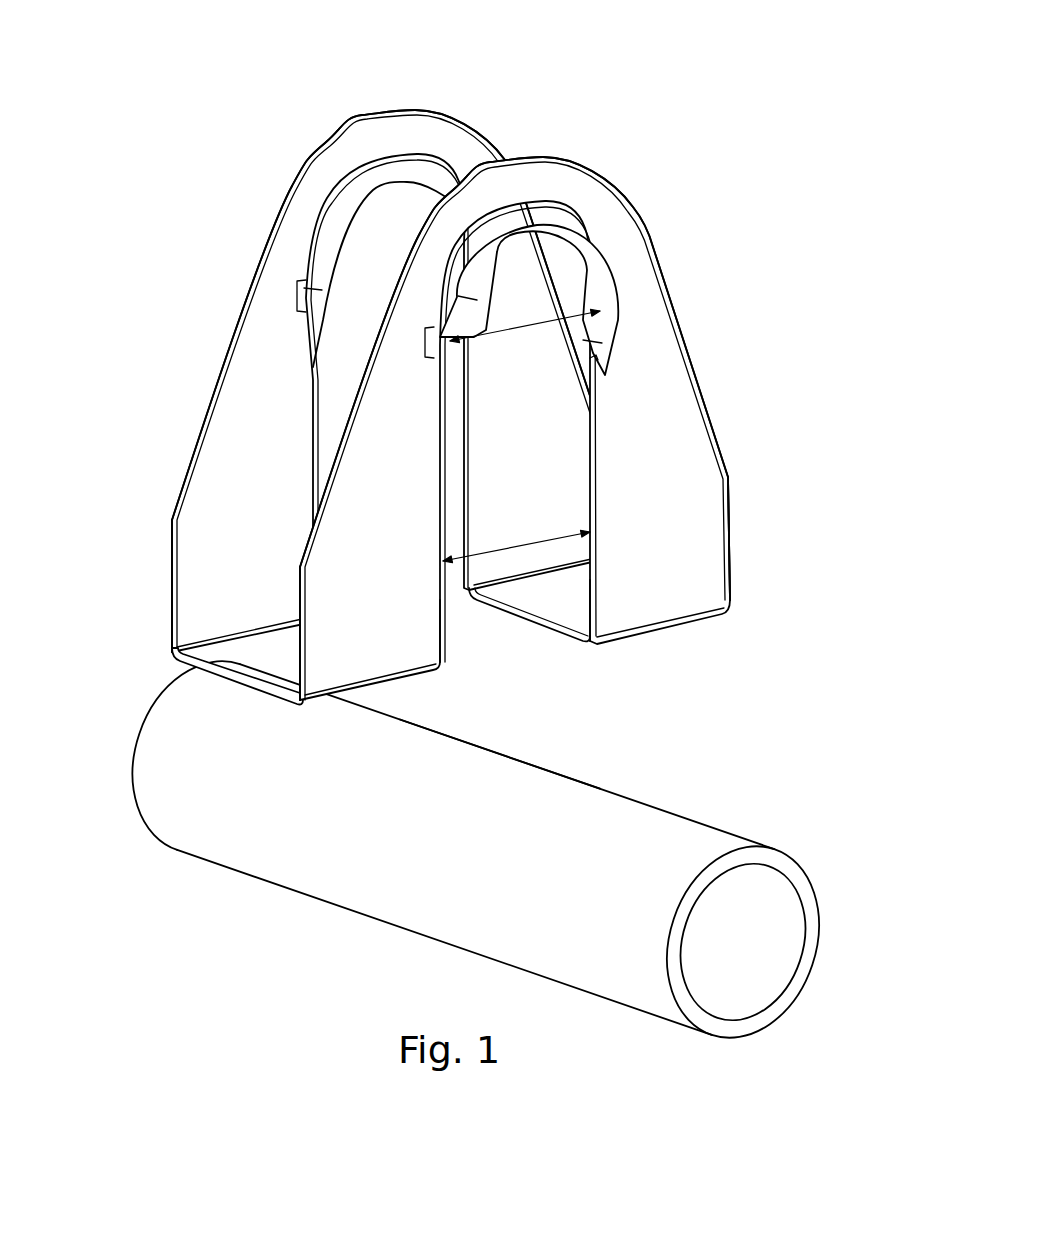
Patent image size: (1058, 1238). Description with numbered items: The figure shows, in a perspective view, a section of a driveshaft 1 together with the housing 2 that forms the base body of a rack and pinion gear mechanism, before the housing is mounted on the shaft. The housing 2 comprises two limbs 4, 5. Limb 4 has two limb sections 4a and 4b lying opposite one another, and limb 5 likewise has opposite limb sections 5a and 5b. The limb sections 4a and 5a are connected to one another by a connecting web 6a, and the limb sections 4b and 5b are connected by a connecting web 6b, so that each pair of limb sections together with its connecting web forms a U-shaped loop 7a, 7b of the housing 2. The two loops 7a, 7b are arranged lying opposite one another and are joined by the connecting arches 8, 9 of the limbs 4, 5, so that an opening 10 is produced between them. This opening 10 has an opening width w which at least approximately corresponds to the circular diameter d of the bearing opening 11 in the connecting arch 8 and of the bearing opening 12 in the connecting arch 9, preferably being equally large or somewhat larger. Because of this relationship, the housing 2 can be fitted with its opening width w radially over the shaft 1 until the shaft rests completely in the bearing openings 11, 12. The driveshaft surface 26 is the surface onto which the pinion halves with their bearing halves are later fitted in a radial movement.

The driveshaft 1 is at (732, 813).
The housing 2 is at (446, 379).
The limb 4 is at (560, 152).
The limb section 4a is at (430, 670).
The limb section 4b is at (727, 460).
The limb 5 is at (393, 97).
The limb section 5a is at (228, 427).
The limb section 5b is at (572, 336).
The connecting web 6a is at (215, 658).
The connecting web 6b is at (565, 612).
The U-shaped loop 7a is at (144, 595).
The U-shaped loop 7b is at (760, 572).
The connecting arch 8 is at (597, 177).
The connecting arch 9 is at (446, 122).
The opening 10 is at (507, 652).
The bearing opening 11 is at (557, 250).
The bearing opening 12 is at (362, 207).
The driveshaft surface 26 is at (466, 849).
The circular diameter d is at (534, 222).
The opening width w is at (515, 548).